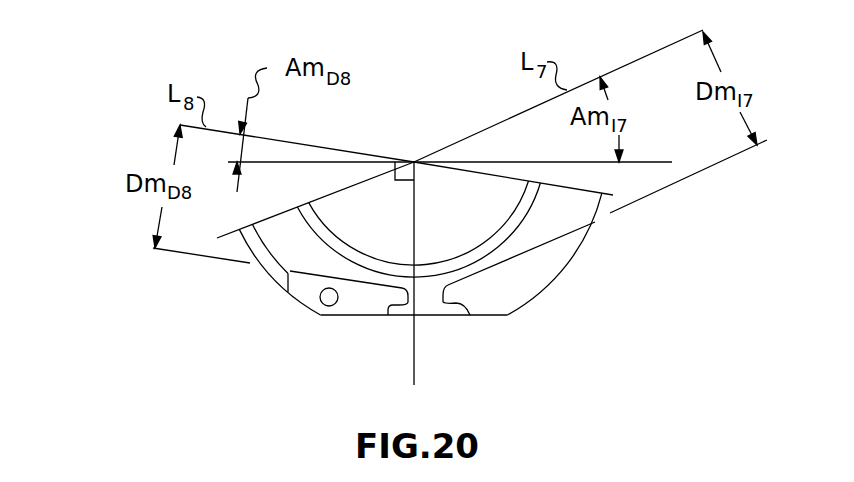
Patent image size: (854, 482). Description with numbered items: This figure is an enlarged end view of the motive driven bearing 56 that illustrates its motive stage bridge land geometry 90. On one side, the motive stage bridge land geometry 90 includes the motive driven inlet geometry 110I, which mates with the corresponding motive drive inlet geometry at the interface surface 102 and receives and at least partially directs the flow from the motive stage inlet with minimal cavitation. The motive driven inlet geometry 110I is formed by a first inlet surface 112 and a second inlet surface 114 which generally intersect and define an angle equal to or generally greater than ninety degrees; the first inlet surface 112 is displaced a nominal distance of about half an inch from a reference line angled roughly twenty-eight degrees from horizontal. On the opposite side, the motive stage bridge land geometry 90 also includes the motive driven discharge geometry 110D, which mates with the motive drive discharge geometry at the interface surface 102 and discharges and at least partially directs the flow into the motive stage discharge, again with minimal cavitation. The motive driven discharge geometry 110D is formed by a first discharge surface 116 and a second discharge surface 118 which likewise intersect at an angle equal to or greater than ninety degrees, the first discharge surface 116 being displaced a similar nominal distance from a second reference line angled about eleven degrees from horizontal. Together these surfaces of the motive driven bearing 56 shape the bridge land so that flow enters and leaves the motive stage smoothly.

The motive driven bearing 56 is at (458, 55).
The motive stage bridge land geometry 90 is at (463, 376).
The interface surface 102 is at (342, 317).
The motive driven discharge geometry 110D is at (175, 303).
The motive driven inlet geometry 110I is at (668, 300).
The first inlet surface 112 is at (568, 232).
The second inlet surface 114 is at (470, 317).
The first discharge surface 116 is at (287, 300).
The second discharge surface 118 is at (394, 318).